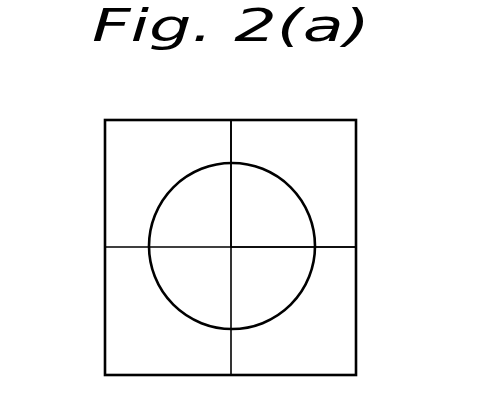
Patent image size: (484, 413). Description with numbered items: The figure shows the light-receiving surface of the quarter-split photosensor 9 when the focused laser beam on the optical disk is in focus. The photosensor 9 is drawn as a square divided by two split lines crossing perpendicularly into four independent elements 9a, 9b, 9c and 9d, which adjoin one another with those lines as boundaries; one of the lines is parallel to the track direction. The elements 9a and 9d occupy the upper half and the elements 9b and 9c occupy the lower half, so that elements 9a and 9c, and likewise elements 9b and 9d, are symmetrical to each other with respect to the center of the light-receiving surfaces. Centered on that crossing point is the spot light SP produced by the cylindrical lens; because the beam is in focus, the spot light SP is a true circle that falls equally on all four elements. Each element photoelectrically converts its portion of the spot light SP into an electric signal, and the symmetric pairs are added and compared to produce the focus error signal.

The quarter-split photosensor 9 is at (103, 190).
The element 9a is at (168, 183).
The element 9b is at (174, 311).
The element 9c is at (293, 306).
The element 9d is at (293, 183).
The spot light SP is at (305, 207).